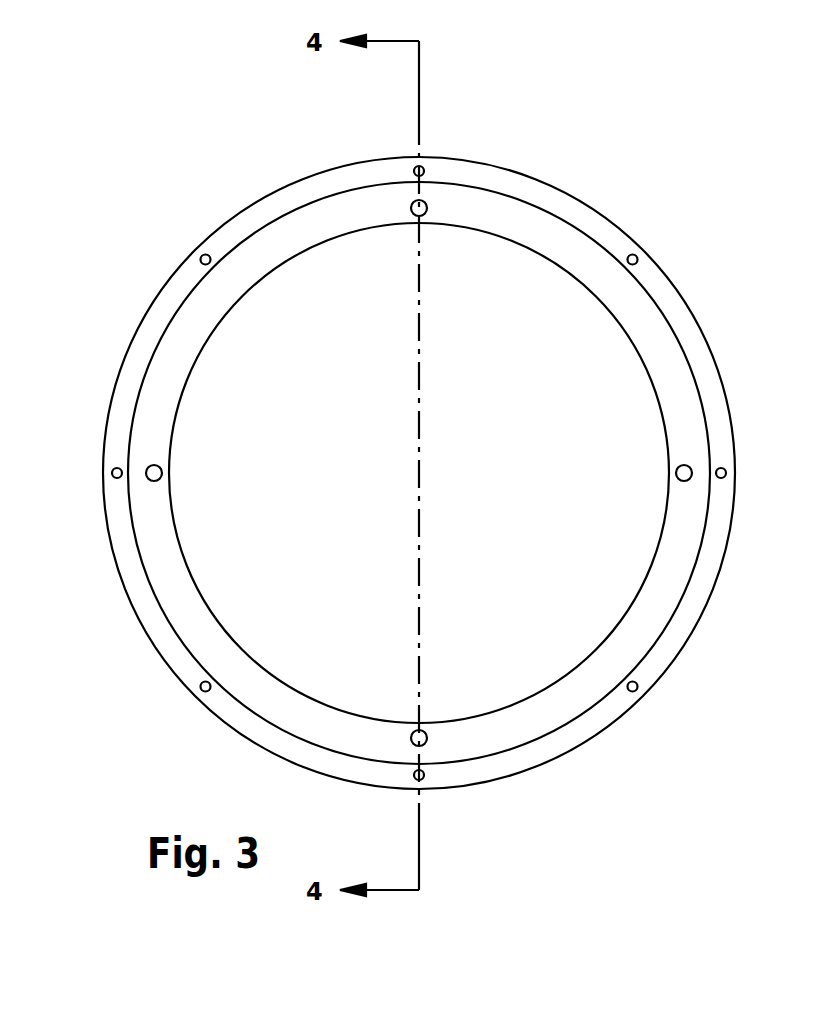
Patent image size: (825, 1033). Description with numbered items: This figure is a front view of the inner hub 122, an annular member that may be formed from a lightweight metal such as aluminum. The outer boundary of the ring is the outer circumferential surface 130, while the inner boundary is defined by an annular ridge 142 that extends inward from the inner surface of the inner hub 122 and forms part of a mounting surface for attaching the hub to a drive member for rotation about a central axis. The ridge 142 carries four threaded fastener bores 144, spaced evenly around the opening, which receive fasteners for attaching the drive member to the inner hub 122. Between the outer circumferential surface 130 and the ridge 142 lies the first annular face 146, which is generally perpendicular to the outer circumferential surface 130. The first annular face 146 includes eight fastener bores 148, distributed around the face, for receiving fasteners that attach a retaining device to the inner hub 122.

The inner hub 122 is at (255, 118).
The outer circumferential surface 130 is at (427, 155).
The annular ridge 142 is at (572, 252).
The threaded fastener bores 144 is at (425, 215).
The first annular face 146 is at (528, 193).
The fastener bores 148 is at (415, 167).